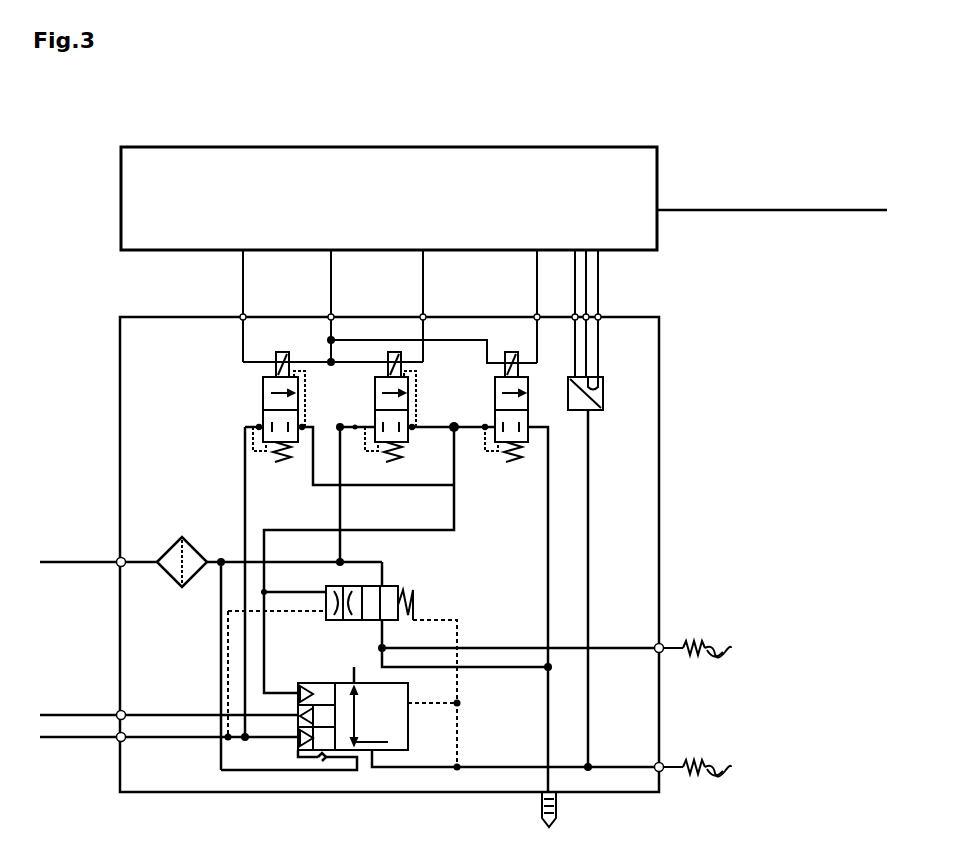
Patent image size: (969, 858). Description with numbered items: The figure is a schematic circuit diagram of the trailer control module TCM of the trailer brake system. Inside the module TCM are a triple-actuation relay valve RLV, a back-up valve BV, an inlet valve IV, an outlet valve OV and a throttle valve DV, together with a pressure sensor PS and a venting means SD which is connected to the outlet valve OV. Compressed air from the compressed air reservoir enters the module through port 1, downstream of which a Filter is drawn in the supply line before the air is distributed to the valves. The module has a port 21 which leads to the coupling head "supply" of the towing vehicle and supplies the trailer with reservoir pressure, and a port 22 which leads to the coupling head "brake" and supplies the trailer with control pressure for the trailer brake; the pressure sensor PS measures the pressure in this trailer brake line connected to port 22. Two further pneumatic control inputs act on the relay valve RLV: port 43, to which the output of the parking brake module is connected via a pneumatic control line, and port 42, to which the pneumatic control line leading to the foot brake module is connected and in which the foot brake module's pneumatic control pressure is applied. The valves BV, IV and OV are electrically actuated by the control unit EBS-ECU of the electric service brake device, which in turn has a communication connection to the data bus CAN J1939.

The control unit EBS- ECU is at (389, 198).
The data bus CAN J1939 CAN is at (772, 191).
The trailer control module TCM is at (389, 554).
The back-up valve BV is at (263, 407).
The inlet valve IV is at (376, 407).
The outlet valve OV is at (489, 407).
The pressure sensor PS is at (607, 393).
The filter Filter is at (186, 549).
The port 1 is at (93, 550).
The throttle valve DV is at (377, 587).
The triple-actuation relay valve RLV is at (348, 700).
The port 43 is at (85, 707).
The port 42 is at (85, 749).
The port 21 is at (721, 637).
The port 22 is at (721, 755).
The venting means SD is at (567, 809).